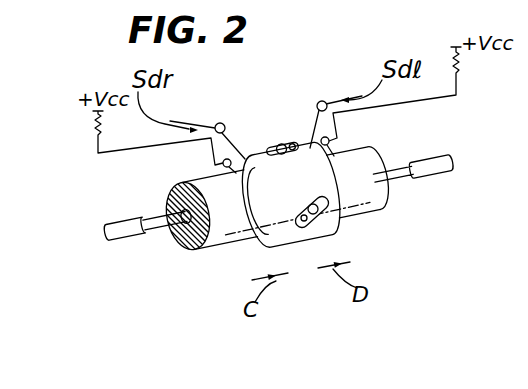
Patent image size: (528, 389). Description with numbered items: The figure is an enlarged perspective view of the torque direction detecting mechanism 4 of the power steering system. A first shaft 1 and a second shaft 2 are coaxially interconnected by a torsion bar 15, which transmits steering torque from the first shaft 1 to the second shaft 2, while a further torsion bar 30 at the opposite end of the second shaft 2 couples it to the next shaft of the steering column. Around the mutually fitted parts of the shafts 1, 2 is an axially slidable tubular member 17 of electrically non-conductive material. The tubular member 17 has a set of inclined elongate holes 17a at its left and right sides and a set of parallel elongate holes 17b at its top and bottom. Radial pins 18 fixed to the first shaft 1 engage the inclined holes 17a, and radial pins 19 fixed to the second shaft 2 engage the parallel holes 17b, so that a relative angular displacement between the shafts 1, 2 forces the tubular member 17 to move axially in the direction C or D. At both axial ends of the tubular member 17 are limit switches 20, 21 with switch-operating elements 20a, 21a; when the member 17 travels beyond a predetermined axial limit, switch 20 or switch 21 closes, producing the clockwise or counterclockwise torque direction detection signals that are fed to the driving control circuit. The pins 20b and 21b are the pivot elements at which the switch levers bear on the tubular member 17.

The first shaft 1 is at (375, 156).
The second shaft 2 is at (222, 237).
The torque direction detecting mechanism 4 is at (284, 129).
The torsion bar 15 is at (397, 177).
The tubular member 17 is at (329, 214).
The inclined elongate holes 17a is at (308, 226).
The parallel elongate holes 17b is at (300, 144).
The radial pins 18 is at (366, 210).
The radial pins 19 is at (280, 147).
The limit switch 20 is at (191, 116).
The switch-operating element 20a is at (221, 123).
The lever pin 20b is at (228, 167).
The limit switch 21 is at (345, 81).
The switch-operating element 21a is at (317, 101).
The lever pin 21b is at (335, 152).
The torsion bar 30 is at (160, 232).